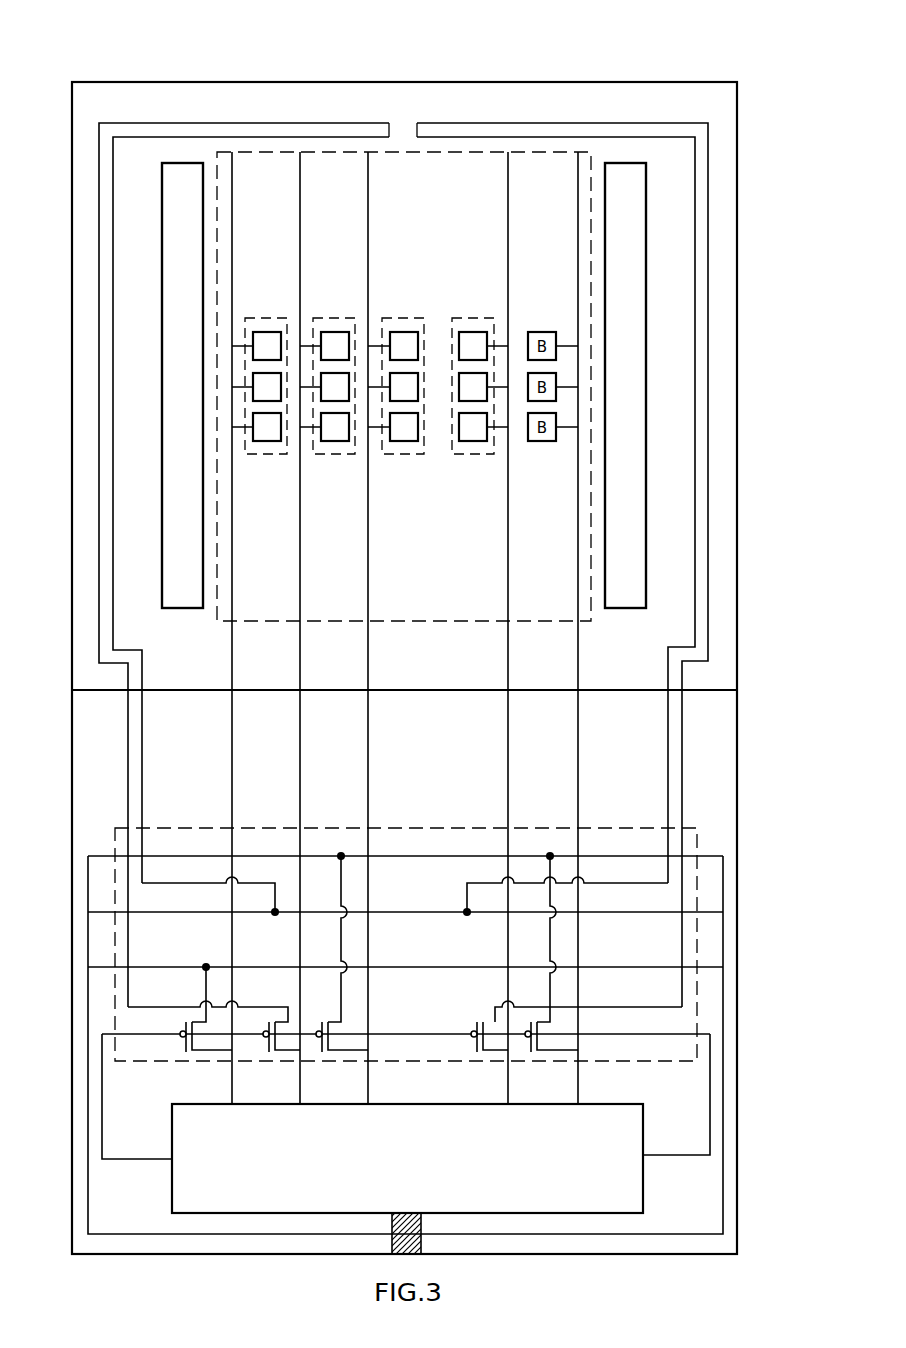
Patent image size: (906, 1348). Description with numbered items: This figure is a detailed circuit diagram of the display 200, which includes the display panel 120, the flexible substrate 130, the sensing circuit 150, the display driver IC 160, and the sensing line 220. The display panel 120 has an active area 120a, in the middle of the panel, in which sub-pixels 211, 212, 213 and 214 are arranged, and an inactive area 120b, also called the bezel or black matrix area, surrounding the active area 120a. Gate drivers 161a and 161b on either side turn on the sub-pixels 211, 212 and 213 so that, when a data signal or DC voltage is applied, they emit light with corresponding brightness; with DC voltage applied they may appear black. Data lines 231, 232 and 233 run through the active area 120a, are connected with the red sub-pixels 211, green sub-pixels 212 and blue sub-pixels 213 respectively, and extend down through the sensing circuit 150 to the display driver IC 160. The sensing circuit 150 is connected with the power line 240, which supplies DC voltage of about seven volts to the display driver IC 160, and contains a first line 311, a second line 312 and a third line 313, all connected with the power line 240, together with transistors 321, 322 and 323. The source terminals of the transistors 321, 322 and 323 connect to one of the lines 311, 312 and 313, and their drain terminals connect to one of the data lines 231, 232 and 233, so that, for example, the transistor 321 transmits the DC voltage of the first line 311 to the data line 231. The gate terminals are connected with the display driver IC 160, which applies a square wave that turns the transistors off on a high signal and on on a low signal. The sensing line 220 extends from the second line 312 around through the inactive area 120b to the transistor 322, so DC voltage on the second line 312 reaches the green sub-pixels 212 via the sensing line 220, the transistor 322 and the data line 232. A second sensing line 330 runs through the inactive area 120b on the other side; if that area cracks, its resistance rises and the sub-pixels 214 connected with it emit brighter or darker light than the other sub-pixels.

The display 200 is at (128, 27).
The display panel 120 is at (460, 37).
The active area 120a is at (402, 150).
The inactive area 120b is at (456, 82).
The sensing line 220 is at (99, 393).
The sensing line 330 is at (708, 393).
The gate driver 161a is at (182, 385).
The gate driver 161b is at (625, 385).
The red sub-pixels 211 is at (266, 318).
The green sub-pixels 212 is at (335, 318).
The blue sub-pixels 213 is at (404, 318).
The sub-pixels 214 is at (473, 318).
The data line 231 is at (236, 737).
The data line 232 is at (304, 737).
The data line 233 is at (372, 737).
The flexible substrate 130 is at (722, 737).
The sensing circuit 150 is at (698, 841).
The third line 313 is at (418, 858).
The second line 312 is at (418, 914).
The first line 311 is at (418, 969).
The transistor 321 is at (205, 1052).
The transistor 322 is at (288, 1052).
The transistor 323 is at (341, 1052).
The display driver IC 160 is at (407, 1158).
The power line 240 is at (425, 1223).